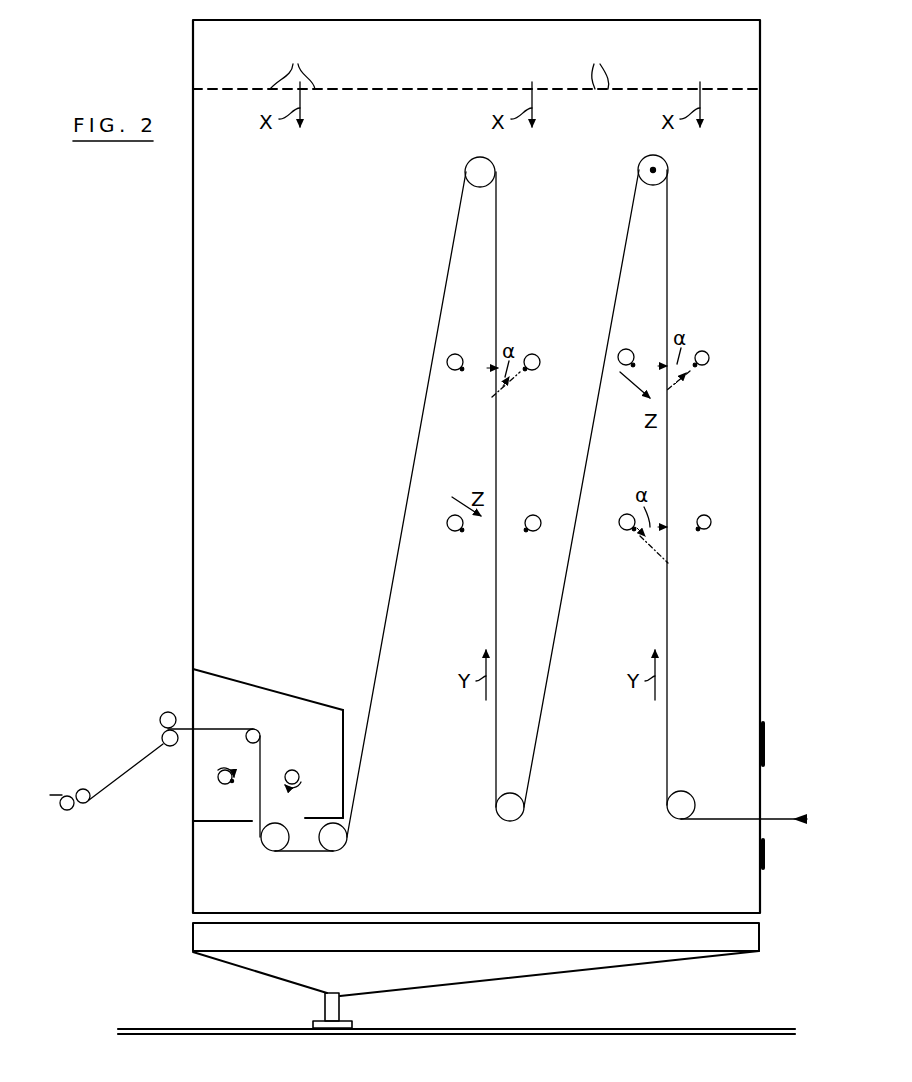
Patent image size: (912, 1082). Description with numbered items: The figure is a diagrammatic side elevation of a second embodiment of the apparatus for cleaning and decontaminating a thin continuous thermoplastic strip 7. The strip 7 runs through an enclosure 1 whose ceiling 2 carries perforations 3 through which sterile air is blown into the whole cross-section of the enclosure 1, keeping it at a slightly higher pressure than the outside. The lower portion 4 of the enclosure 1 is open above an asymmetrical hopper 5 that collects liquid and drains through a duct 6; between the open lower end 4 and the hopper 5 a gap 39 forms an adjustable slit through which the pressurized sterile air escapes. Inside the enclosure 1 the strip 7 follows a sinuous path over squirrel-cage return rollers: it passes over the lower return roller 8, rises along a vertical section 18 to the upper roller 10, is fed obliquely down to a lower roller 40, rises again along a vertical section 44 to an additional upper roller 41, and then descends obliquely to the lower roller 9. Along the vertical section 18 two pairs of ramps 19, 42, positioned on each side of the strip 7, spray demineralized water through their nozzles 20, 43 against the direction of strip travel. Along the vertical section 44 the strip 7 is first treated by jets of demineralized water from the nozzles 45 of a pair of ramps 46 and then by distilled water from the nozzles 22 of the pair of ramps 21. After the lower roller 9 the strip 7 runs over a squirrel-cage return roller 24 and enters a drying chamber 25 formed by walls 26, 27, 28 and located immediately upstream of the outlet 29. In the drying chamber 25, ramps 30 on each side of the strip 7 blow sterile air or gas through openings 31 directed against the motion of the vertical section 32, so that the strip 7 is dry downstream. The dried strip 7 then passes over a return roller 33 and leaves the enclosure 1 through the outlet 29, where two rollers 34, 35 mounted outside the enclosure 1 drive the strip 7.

The enclosure 1 is at (766, 210).
The ceiling 2 is at (440, 89).
The perforations 3 is at (439, 65).
The lower portion 4 is at (762, 883).
The hopper 5 is at (273, 960).
The duct 6 is at (339, 1007).
The strip 7 is at (118, 766).
The lower return roller 8 is at (681, 808).
The lower roller 9 is at (339, 844).
The upper roller 10 is at (652, 169).
The vertical section 18 is at (667, 462).
The first pair of ramps 19 is at (627, 514).
The nozzles 20 is at (634, 531).
The second pair of ramps 21 is at (455, 354).
The nozzles 22 is at (462, 371).
The return roller 24 is at (278, 840).
The drying chamber 25 is at (274, 716).
The wall 26 is at (234, 681).
The wall 27 is at (347, 712).
The wall 28 is at (209, 824).
The outlet 29 is at (190, 731).
The ramps 30 is at (322, 775).
The openings 31 is at (232, 784).
The vertical section 32 is at (261, 762).
The return roller 33 is at (252, 729).
The roller 34 is at (167, 712).
The roller 35 is at (165, 748).
The gap 39 is at (685, 915).
The lower roller 40 is at (510, 810).
The additional upper roller 41 is at (470, 165).
The pair of ramps 42 is at (628, 349).
The nozzles 43 is at (634, 364).
The vertical section 44 is at (497, 420).
The nozzles 45 is at (462, 532).
The pair of ramps 46 is at (455, 516).